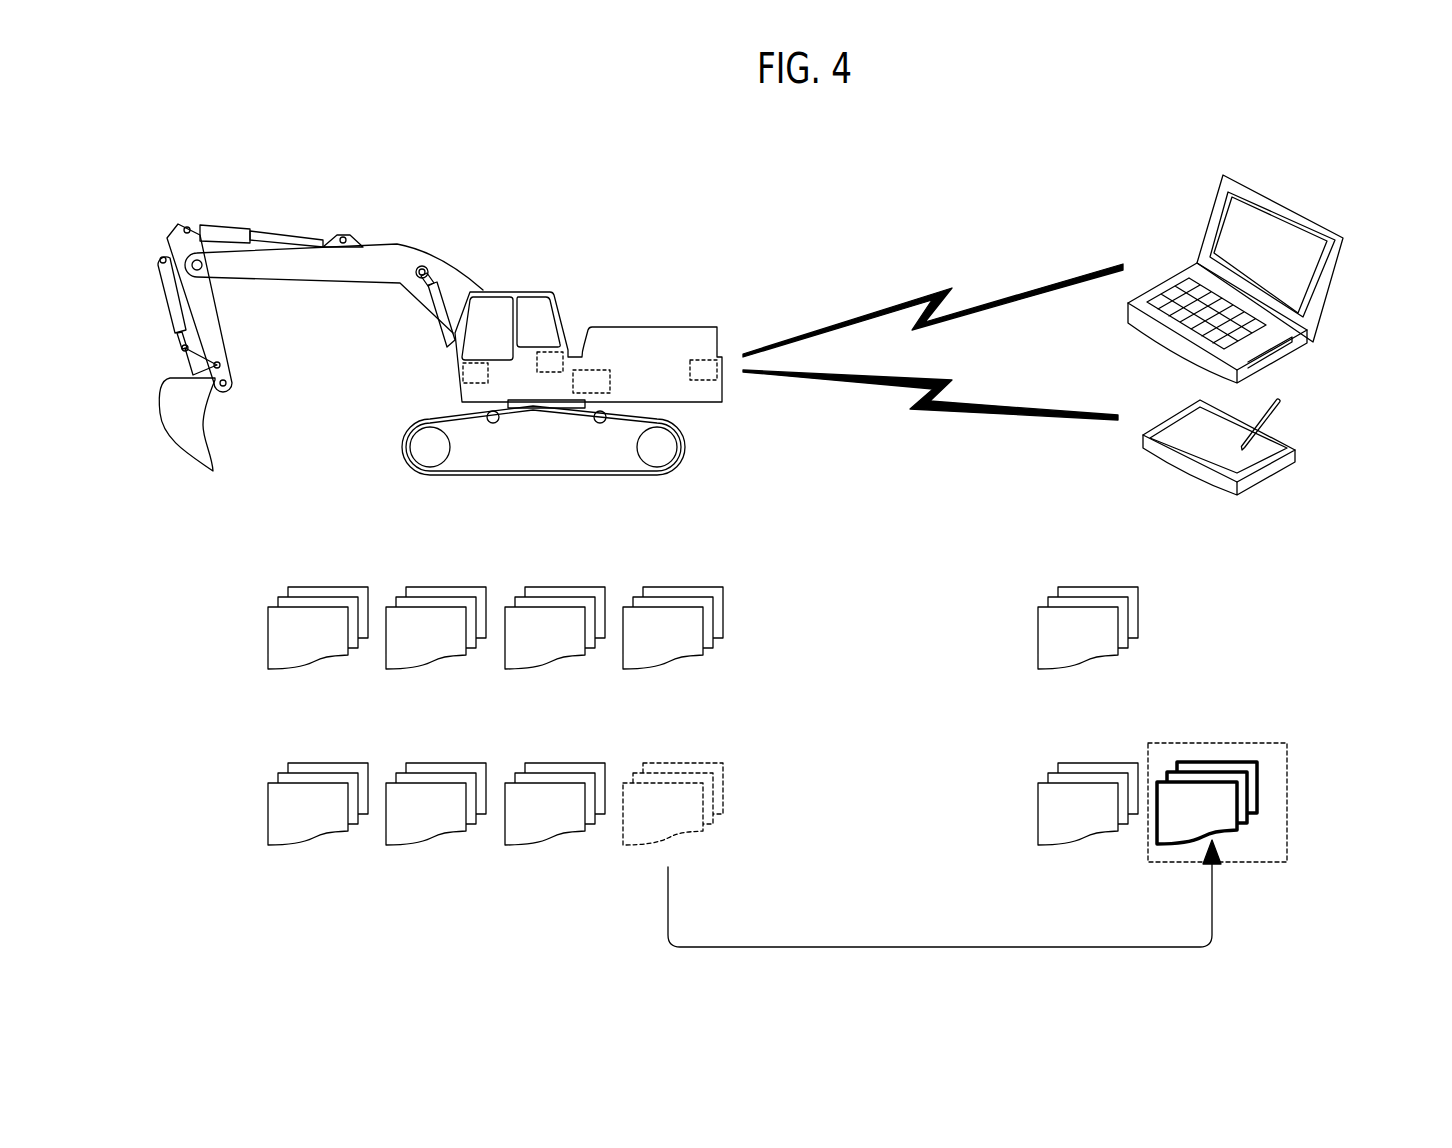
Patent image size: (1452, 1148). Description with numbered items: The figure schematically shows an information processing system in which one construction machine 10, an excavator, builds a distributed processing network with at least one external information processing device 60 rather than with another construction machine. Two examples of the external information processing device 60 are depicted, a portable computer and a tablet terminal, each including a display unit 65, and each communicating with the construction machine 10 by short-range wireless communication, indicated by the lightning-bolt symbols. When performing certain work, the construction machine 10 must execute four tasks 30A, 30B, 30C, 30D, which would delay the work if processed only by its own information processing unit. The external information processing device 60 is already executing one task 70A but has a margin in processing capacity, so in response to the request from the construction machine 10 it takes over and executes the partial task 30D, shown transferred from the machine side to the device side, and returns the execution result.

The construction machine 10 is at (440, 339).
The task 30A is at (330, 689).
The task 30B is at (448, 689).
The task 30C is at (566, 689).
The task 30D is at (963, 740).
The external information processing device 60 is at (1272, 334).
The display unit 65 is at (1232, 323).
The task 70A is at (1101, 689).